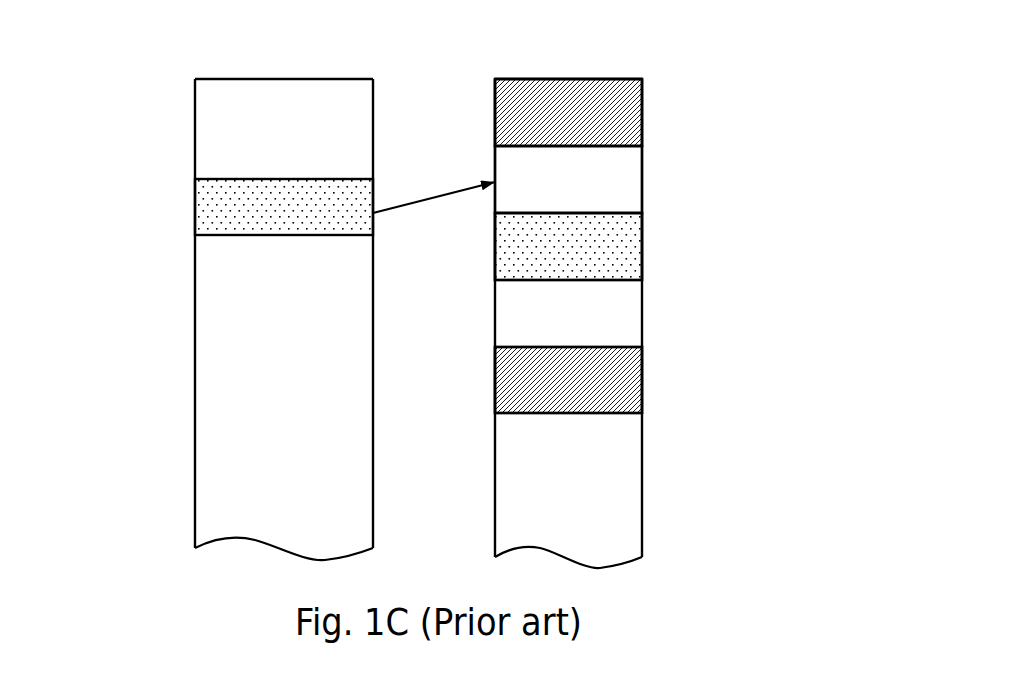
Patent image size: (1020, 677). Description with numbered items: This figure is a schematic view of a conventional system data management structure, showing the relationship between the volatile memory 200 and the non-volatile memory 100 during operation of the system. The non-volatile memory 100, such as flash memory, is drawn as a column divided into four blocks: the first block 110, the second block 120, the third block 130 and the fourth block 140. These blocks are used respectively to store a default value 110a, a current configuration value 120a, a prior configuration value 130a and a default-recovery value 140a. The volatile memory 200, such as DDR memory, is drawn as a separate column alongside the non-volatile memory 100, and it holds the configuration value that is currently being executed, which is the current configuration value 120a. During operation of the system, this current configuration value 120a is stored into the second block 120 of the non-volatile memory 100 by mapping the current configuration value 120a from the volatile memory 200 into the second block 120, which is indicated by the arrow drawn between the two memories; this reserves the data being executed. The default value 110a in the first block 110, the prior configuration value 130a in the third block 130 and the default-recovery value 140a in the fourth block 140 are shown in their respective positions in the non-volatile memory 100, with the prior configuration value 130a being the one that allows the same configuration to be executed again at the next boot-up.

The non-volatile memory 100 is at (592, 506).
The first block 110 is at (642, 110).
The default value 110a is at (592, 96).
The second block 120 is at (642, 177).
The current configuration value 120a is at (215, 213).
The third block 130 is at (642, 232).
The prior configuration value 130a is at (620, 259).
The fourth block 140 is at (642, 367).
The default-recovery value 140a is at (620, 392).
The volatile memory 200 is at (312, 506).